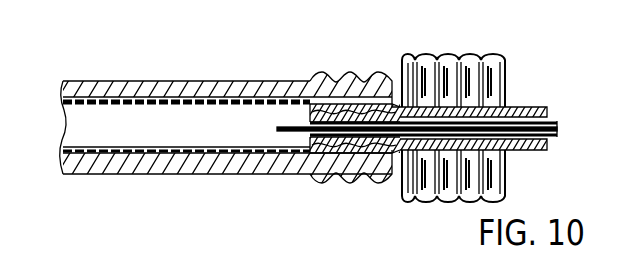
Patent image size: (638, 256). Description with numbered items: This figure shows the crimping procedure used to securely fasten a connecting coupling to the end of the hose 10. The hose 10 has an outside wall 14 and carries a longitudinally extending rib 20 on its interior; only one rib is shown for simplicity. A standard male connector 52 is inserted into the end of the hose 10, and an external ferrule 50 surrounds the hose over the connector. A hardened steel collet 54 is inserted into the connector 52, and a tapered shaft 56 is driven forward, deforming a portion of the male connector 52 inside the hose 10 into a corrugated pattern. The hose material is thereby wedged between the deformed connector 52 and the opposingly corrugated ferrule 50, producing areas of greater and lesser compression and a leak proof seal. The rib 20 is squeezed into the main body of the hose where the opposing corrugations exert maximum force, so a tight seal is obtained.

The hose 10 is at (301, 116).
The outside wall 14 is at (129, 80).
The rib 20 is at (133, 147).
The external ferrule 50 is at (355, 78).
The male connector 52 is at (501, 176).
The hardened steel collet 54 is at (535, 106).
The tapered shaft 56 is at (557, 128).